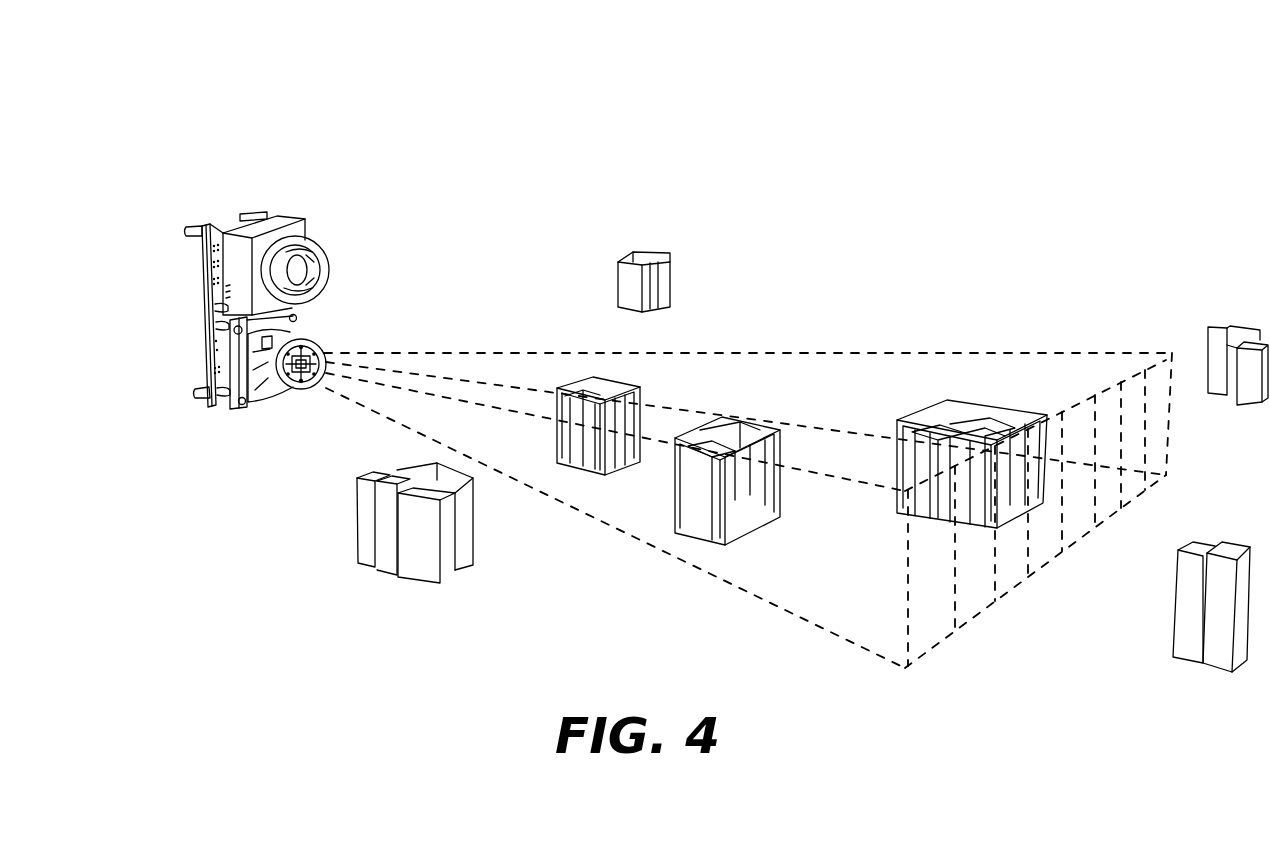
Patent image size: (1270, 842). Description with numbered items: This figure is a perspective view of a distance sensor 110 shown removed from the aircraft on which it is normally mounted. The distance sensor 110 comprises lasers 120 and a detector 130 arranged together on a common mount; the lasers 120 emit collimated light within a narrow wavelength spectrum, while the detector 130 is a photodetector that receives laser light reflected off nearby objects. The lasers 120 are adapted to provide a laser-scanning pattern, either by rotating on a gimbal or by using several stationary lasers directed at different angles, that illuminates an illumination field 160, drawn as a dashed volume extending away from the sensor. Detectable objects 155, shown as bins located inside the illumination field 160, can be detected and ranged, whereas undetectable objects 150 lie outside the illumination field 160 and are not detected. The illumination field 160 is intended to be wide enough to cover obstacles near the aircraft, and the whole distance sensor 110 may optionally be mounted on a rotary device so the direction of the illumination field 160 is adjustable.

The distance sensor 110 is at (236, 94).
The lasers 120 is at (243, 404).
The detector 130 is at (273, 276).
The undetectable objects 150 is at (670, 270).
The detectable objects 155 is at (598, 458).
The illumination field 160 is at (853, 370).